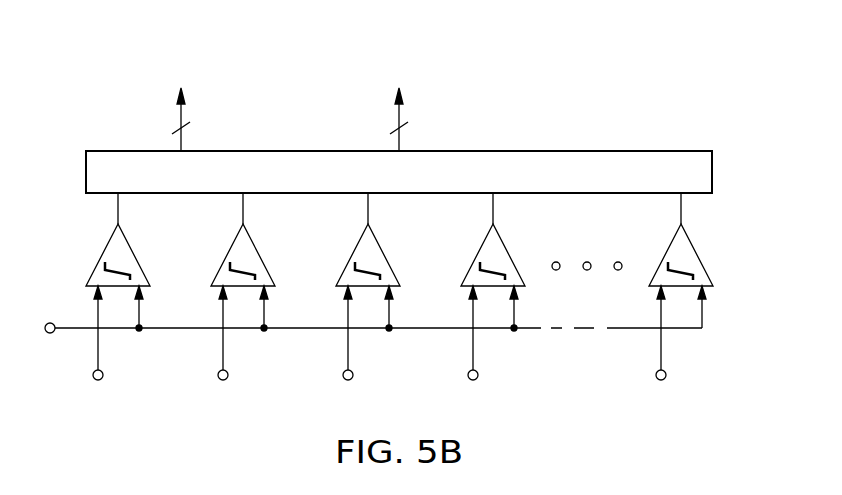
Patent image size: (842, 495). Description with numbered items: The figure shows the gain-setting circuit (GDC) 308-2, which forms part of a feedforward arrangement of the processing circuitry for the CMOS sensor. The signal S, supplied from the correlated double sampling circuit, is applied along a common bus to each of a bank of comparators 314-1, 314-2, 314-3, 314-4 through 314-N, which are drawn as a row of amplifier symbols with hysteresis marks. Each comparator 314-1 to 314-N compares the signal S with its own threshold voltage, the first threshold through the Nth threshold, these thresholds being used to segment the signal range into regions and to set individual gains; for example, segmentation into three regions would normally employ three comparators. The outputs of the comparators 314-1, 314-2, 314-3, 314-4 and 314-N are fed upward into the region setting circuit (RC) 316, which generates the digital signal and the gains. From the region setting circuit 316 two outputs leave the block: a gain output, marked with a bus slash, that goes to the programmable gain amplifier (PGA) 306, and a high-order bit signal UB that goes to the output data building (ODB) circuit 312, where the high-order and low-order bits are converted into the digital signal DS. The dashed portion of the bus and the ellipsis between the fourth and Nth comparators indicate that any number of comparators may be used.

The gain-setting circuit (GDC) 308-2 is at (640, 78).
The region setting circuit (RC) 316 is at (86, 172).
The programmable gain amplifier (PGA) 306 is at (138, 74).
The output data building (ODB) circuit 312 is at (440, 73).
The comparator 314-1 is at (103, 253).
The comparator 314-2 is at (228, 253).
The comparator 314-3 is at (353, 253).
The comparator 314-4 is at (540, 243).
The comparator 314-N is at (730, 242).